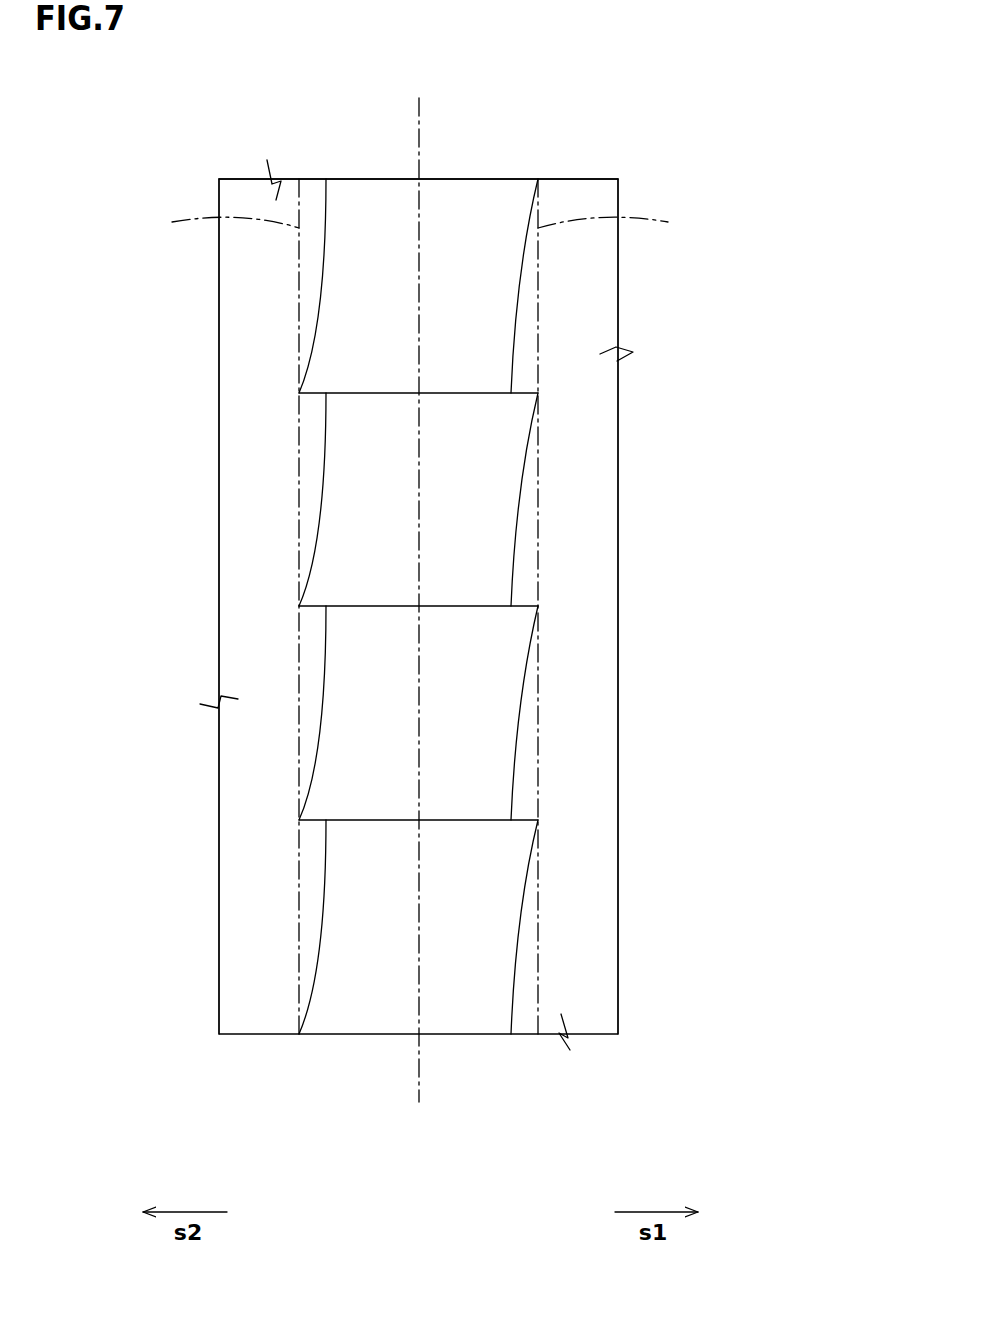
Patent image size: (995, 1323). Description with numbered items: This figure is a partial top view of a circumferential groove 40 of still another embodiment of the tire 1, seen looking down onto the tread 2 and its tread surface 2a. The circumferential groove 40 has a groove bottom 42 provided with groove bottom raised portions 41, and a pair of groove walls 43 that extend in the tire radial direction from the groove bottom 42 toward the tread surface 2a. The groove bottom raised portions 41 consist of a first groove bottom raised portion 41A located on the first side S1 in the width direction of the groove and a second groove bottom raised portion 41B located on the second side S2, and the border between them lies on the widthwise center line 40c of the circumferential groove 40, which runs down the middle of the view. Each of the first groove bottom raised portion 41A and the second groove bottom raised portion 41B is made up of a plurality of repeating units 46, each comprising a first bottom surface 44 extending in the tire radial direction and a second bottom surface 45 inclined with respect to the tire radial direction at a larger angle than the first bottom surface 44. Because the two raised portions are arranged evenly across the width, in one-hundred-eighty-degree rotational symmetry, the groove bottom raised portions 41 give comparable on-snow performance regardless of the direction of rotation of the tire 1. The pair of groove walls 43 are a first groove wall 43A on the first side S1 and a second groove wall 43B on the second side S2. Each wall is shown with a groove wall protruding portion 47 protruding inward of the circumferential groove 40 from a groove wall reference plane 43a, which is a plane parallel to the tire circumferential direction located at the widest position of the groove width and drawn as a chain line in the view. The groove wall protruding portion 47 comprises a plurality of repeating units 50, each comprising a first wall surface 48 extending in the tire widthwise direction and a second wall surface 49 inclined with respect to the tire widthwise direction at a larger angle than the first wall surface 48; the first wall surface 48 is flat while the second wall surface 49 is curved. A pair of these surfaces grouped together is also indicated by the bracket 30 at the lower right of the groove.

The tire 1 is at (633, 105).
The tread 2 is at (545, 138).
The tread surface 2a is at (583, 310).
The second corner portion pair 30 is at (722, 848).
The circumferential groove 40 is at (470, 160).
The widthwise center line of the circumferential groove 40c is at (418, 588).
The groove bottom raised portions 41 is at (735, 617).
The first groove bottom raised portion 41A is at (467, 737).
The second groove bottom raised portion 41B is at (378, 735).
The groove bottom 42 is at (370, 225).
The groove walls 43 is at (348, 1152).
The first groove wall 43A is at (508, 972).
The second groove wall 43B is at (315, 972).
The groove wall reference plane 43a is at (419, 606).
The first bottom surface 44 is at (478, 603).
The second bottom surface 45 is at (455, 652).
The repeating units 46 is at (718, 392).
The groove wall protruding portion 47 is at (320, 438).
The first wall surface 48 is at (311, 604).
The second wall surface 49 is at (325, 683).
The repeating units 50 is at (135, 513).